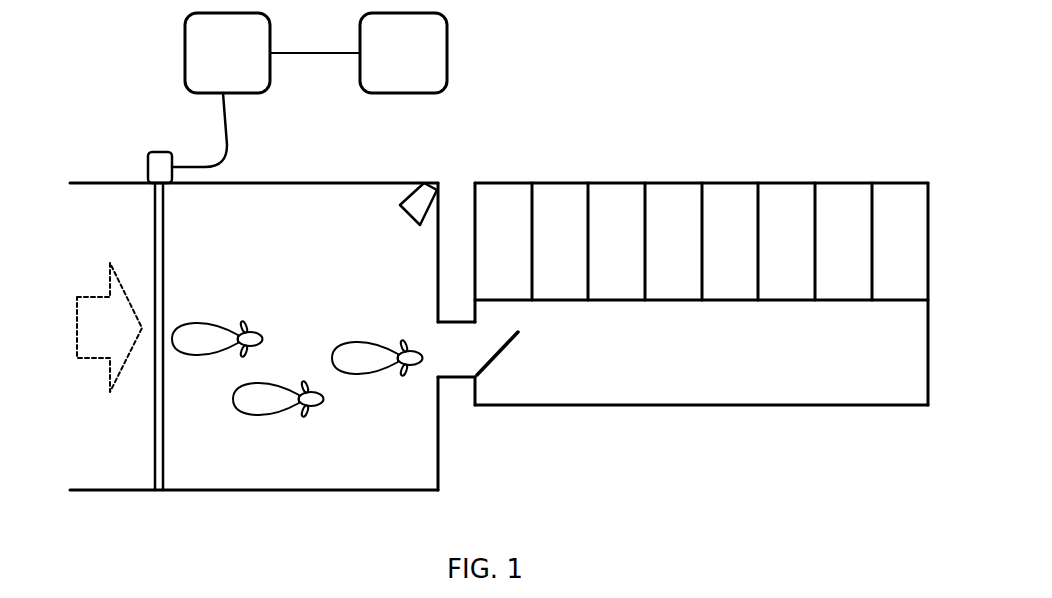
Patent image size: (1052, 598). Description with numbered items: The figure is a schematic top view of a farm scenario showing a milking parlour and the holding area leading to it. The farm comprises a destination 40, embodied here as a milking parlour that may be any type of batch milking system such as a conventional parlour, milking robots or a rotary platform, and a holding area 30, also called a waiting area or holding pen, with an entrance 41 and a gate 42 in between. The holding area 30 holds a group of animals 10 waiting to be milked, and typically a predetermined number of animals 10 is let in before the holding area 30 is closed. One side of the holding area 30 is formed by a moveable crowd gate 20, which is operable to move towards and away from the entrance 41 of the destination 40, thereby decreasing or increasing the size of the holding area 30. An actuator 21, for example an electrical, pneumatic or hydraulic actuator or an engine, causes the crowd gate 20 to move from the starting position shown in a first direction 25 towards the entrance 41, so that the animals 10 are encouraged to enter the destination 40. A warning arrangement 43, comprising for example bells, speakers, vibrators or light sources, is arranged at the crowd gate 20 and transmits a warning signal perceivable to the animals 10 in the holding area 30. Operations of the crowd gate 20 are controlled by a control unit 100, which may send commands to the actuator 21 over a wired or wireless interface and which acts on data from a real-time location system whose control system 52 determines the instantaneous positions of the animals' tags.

The animals 10 is at (224, 322).
The crowd gate 20 is at (148, 453).
The actuator 21 is at (158, 162).
The first direction 25 is at (100, 325).
The holding area 30 is at (312, 214).
The destination 40 is at (771, 160).
The entrance 41 is at (447, 352).
The gate 42 is at (488, 363).
The warning arrangement 43 is at (412, 192).
The control system 52 is at (390, 65).
The control unit 100 is at (245, 65).